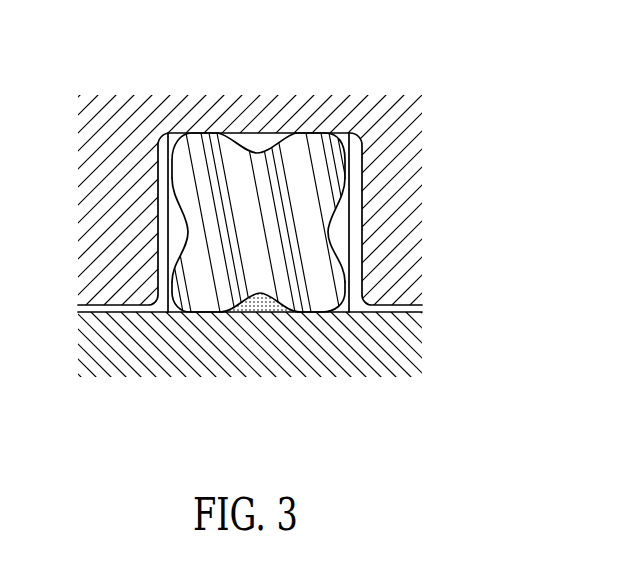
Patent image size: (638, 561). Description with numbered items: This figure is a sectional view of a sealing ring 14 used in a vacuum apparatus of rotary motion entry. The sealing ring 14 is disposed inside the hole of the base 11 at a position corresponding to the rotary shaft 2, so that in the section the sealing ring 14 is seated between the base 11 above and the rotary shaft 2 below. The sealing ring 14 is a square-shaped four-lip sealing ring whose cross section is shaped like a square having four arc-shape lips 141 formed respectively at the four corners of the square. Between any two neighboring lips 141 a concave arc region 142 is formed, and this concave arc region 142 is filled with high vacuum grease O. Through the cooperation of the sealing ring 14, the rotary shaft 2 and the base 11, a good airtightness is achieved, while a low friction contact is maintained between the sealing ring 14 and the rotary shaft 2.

The base 11 is at (413, 155).
The rotary shaft 2 is at (397, 366).
The sealing ring 14 is at (312, 234).
The arc-shape lip 141 is at (163, 135).
The concave arc region 142 is at (255, 140).
The high vacuum grease O is at (243, 308).